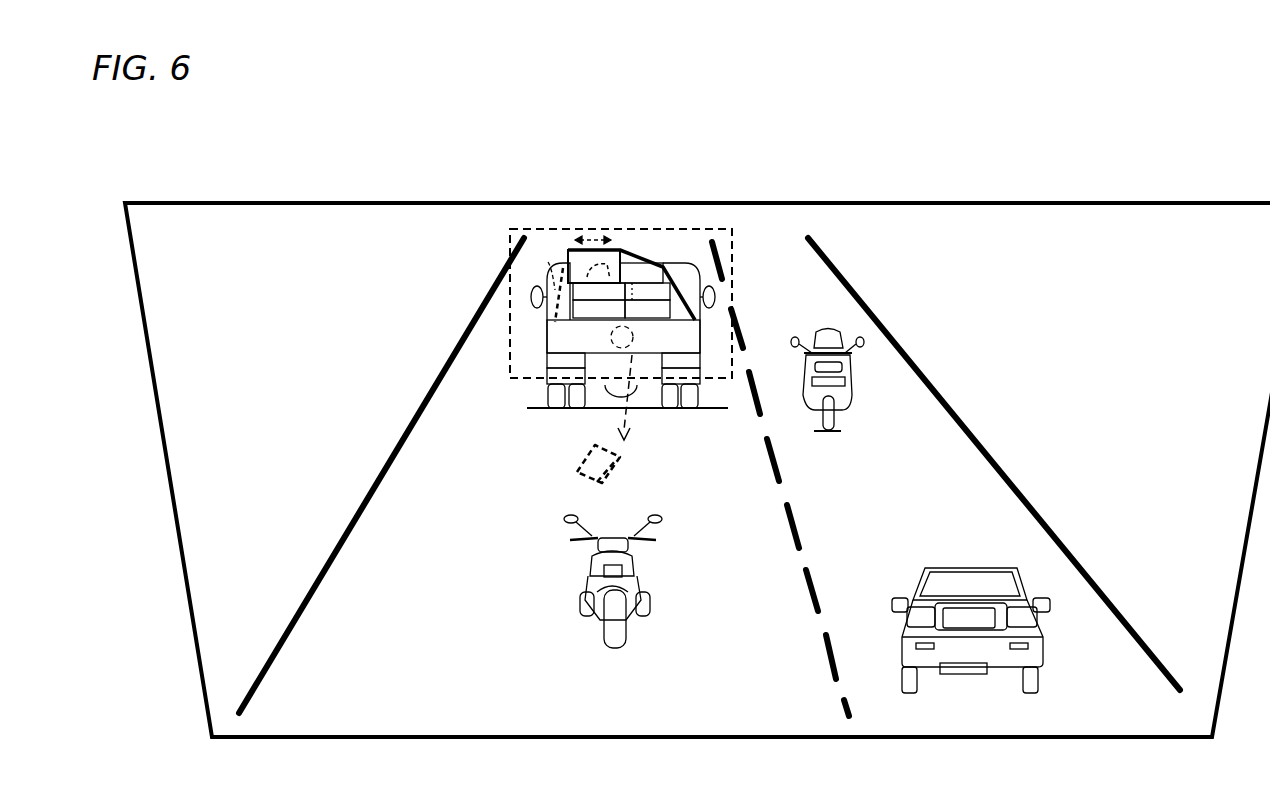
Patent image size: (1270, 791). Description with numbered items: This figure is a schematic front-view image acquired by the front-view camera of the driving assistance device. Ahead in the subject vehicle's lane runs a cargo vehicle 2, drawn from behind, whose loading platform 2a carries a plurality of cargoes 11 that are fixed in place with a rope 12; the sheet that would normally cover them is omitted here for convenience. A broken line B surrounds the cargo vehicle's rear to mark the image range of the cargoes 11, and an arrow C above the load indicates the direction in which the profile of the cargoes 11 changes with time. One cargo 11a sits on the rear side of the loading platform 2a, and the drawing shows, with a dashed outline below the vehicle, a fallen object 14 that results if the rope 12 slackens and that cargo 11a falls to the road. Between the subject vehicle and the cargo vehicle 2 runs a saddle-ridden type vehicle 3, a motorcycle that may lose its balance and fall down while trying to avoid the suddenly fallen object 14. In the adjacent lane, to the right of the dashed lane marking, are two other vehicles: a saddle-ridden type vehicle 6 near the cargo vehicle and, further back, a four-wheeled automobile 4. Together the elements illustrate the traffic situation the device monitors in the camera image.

The cargo vehicle 2 is at (687, 265).
The loading platform 2a is at (587, 310).
The saddle-ridden type vehicle 3 is at (637, 583).
The four-wheeled automobile 4 is at (980, 568).
The saddle-ridden type vehicle 6 is at (848, 390).
The cargoes 11 is at (662, 293).
The cargo 11a is at (588, 276).
The rope 12 is at (562, 322).
The fallen object 14 is at (617, 457).
The image range of cargoes B is at (683, 227).
The direction of profile change C is at (591, 247).